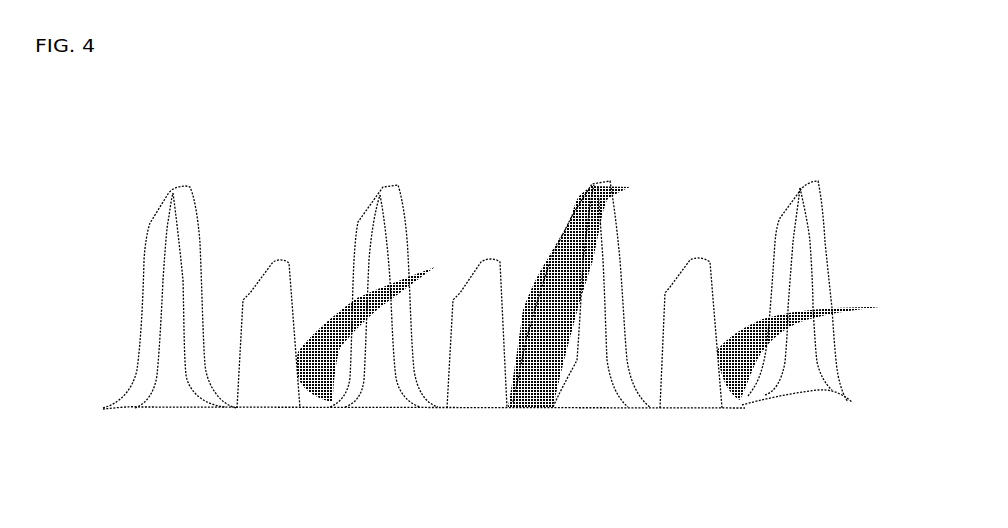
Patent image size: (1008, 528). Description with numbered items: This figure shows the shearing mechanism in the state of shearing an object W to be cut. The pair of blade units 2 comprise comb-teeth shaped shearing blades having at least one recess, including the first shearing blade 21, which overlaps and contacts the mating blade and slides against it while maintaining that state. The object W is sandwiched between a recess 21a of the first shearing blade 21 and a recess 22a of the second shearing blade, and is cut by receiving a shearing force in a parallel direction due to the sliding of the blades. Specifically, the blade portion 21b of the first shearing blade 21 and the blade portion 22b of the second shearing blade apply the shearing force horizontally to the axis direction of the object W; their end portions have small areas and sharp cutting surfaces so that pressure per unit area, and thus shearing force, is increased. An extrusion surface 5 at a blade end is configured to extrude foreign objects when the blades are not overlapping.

The blade unit 2 is at (832, 110).
The extrusion surface 5 is at (778, 216).
The first shearing blade 21 is at (377, 284).
The recess 21a is at (272, 240).
The blade portion 21b is at (180, 194).
The recess 22a is at (212, 328).
The blade portion 22b is at (452, 330).
The object to be cut W is at (334, 327).